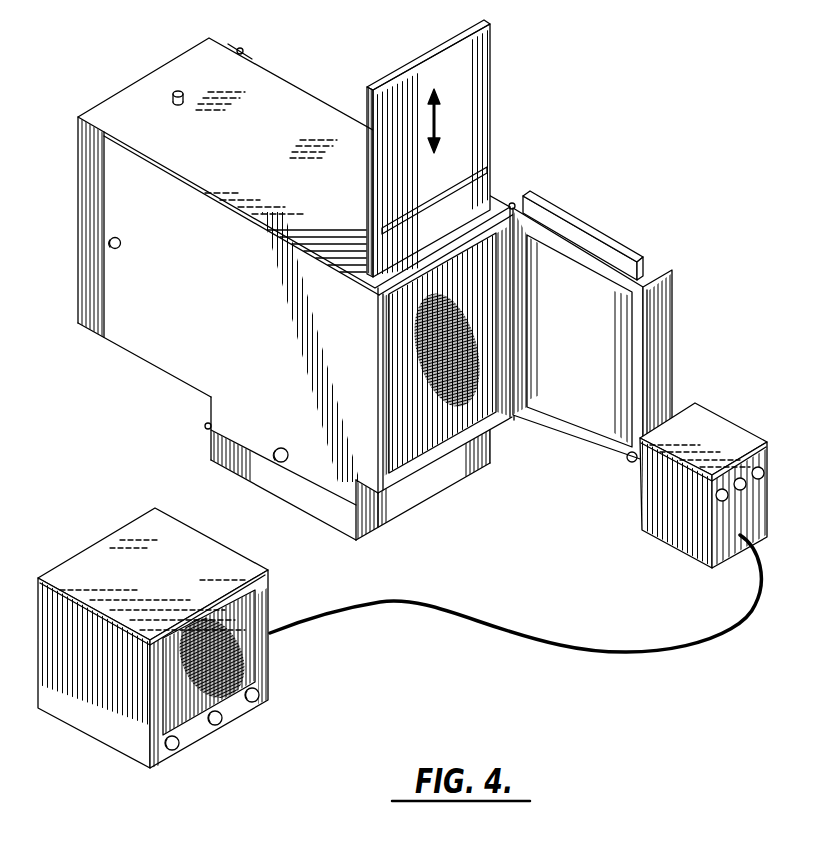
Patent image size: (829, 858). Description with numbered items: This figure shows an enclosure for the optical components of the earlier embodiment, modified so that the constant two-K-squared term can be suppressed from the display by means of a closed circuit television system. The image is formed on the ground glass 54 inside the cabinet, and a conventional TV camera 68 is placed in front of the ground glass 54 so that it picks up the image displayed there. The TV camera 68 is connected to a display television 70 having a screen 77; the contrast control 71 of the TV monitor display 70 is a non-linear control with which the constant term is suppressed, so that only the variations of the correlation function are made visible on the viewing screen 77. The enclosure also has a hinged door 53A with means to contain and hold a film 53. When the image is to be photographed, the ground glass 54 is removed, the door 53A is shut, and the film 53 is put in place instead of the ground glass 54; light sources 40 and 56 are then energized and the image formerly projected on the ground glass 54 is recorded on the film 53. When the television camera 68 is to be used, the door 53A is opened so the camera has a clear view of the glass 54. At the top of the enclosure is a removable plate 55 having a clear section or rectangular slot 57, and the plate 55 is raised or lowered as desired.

The light source 40 is at (407, 511).
The film 53 is at (573, 213).
The hinged door 53A is at (672, 273).
The ground glass 54 is at (463, 405).
The removable plate 55 is at (490, 56).
The light source 56 is at (170, 61).
The rectangular slot 57 is at (487, 176).
The TV camera 68 is at (640, 512).
The display television 70 is at (98, 740).
The contrast control 71 is at (177, 749).
The screen 77 is at (243, 655).